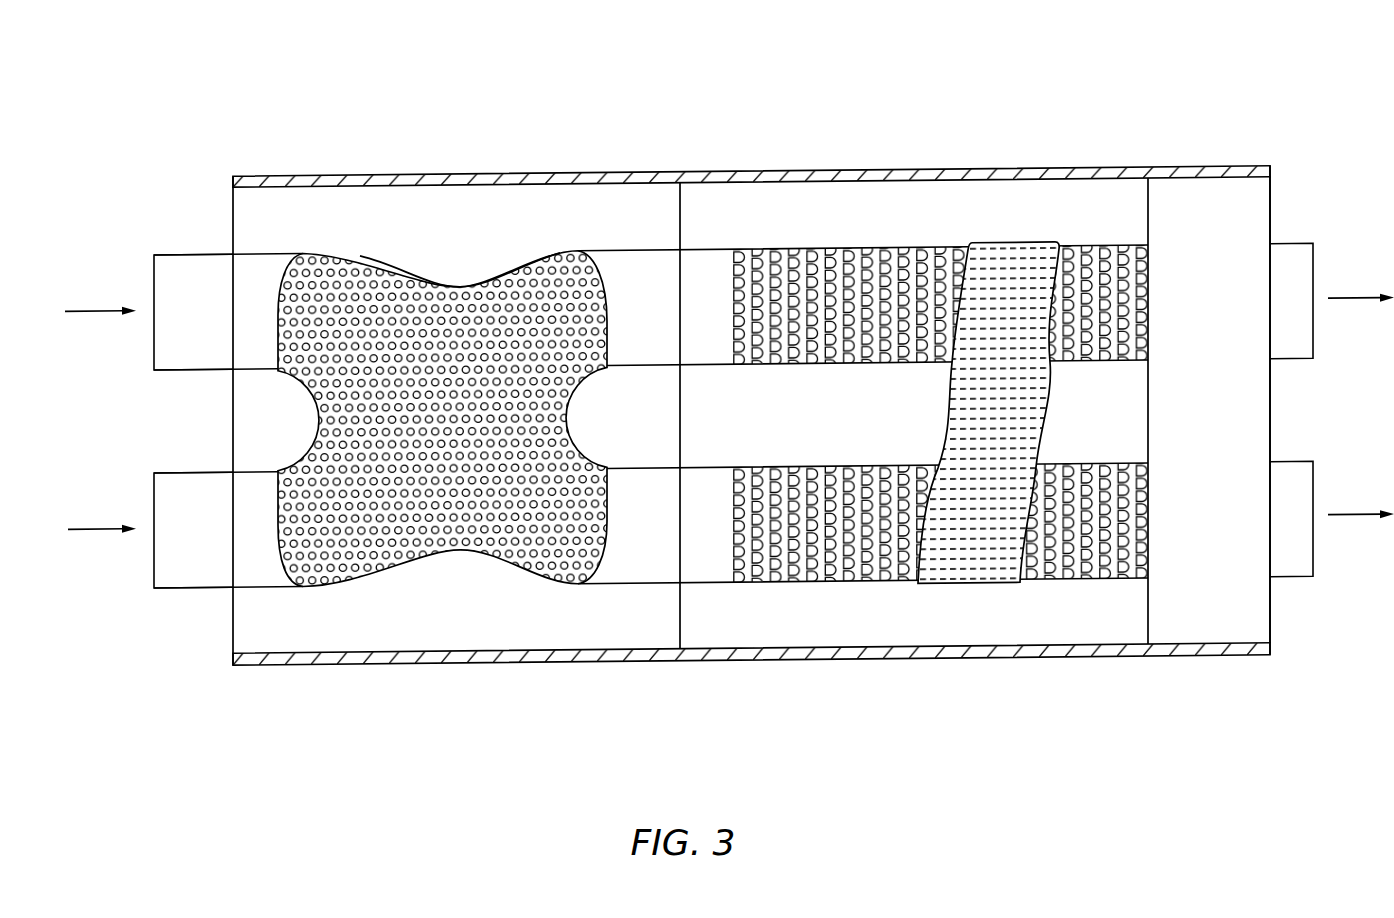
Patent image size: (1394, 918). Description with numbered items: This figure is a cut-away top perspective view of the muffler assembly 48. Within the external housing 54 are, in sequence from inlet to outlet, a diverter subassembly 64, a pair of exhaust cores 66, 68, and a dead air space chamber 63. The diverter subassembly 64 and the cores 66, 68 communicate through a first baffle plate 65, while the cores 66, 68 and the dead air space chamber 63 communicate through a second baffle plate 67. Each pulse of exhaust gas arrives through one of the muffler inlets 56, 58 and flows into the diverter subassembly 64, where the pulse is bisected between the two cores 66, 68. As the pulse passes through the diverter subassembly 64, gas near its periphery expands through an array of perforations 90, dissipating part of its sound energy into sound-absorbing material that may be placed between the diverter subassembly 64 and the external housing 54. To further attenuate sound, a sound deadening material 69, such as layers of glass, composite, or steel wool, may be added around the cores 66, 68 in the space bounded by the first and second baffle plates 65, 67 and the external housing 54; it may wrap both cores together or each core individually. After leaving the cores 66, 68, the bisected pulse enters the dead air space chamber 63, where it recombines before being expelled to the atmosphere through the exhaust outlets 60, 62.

The muffler assembly 48 is at (729, 385).
The external housing 54 is at (990, 174).
The muffler inlet 56 is at (178, 248).
The muffler inlet 58 is at (178, 582).
The exhaust outlet 60 is at (1282, 248).
The exhaust outlet 62 is at (1280, 582).
The dead air space chamber 63 is at (1236, 212).
The diverter subassembly 64 is at (347, 286).
The first baffle plate 65 is at (680, 632).
The exhaust core 66 is at (868, 251).
The second baffle plate 67 is at (1147, 622).
The exhaust core 68 is at (857, 588).
The sound deadening material 69 is at (1040, 406).
The perforations 90 is at (370, 283).